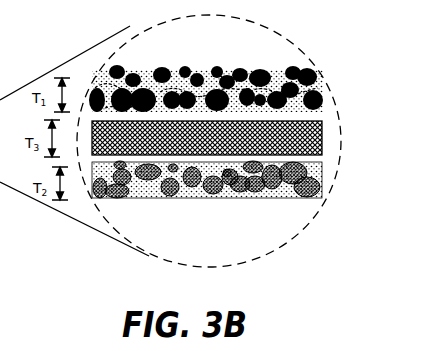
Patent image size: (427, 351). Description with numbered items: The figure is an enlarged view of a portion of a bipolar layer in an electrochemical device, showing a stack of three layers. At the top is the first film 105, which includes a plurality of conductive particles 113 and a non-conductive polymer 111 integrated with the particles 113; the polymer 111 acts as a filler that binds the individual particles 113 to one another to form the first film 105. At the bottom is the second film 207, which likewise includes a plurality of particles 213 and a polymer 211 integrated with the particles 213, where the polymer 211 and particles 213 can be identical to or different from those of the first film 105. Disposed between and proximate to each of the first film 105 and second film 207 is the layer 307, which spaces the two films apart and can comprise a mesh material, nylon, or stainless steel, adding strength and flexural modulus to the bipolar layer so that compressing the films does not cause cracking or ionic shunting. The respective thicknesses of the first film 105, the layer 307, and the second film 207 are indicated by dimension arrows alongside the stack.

The first film 105 is at (235, 69).
The polymer 111 is at (160, 70).
The particles 113 is at (195, 72).
The layer 307 is at (348, 145).
The second film 207 is at (237, 203).
The polymer 211 is at (150, 198).
The particles 213 is at (294, 197).